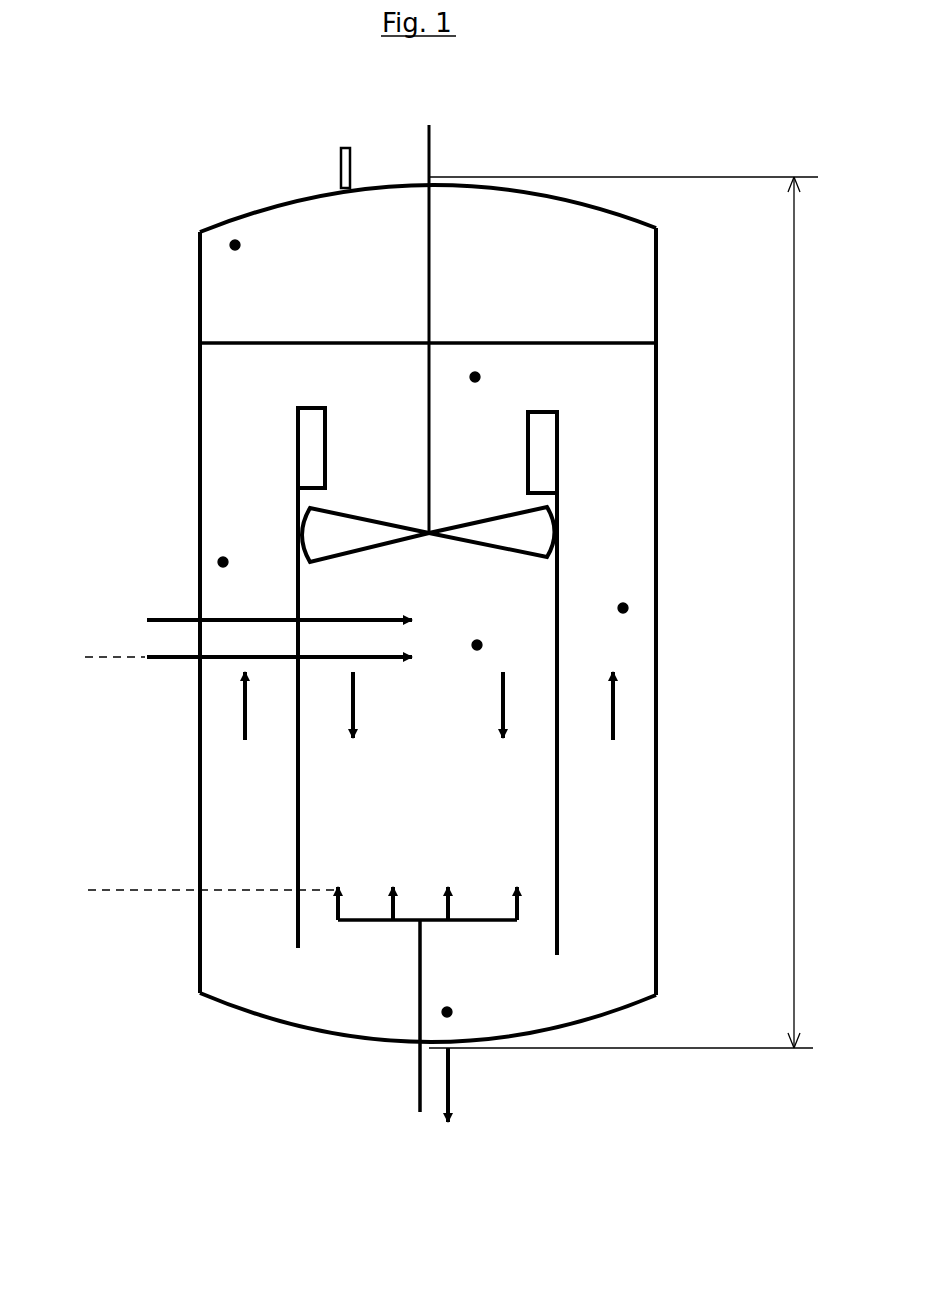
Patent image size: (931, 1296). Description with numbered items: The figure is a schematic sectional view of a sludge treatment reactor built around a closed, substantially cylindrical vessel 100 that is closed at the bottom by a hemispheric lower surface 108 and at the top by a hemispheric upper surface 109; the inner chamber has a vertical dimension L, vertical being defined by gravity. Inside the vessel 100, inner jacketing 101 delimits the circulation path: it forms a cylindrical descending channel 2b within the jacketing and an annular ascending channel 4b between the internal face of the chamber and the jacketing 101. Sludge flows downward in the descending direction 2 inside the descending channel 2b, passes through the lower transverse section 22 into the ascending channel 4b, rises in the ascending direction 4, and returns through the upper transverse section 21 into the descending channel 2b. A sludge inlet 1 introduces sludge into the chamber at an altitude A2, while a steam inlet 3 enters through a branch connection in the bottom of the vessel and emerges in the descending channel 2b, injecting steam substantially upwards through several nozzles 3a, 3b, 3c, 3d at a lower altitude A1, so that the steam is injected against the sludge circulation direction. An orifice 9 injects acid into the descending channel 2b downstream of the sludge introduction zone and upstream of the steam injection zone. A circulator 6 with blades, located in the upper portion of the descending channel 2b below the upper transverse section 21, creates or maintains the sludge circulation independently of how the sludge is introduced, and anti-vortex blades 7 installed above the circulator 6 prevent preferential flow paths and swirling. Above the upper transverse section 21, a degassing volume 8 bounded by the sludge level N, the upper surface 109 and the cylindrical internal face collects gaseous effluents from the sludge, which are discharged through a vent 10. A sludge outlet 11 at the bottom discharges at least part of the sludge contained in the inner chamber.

The sludge inlet 1 is at (374, 618).
The descending direction 2 is at (348, 705).
The descending channel 2b is at (477, 645).
The steam inlet 3 is at (420, 945).
The nozzle 3a is at (342, 888).
The nozzle 3b is at (397, 888).
The nozzle 3c is at (452, 888).
The nozzle 3d is at (518, 888).
The ascending direction 4 is at (242, 722).
The ascending channel 4b is at (223, 562).
The circulator 6 is at (368, 516).
The blades 7 is at (326, 440).
The degassing volume 8 is at (235, 245).
The orifice 9 is at (384, 661).
The vent 10 is at (341, 152).
The sludge outlet 11 is at (452, 1075).
The upper transverse section 21 is at (475, 377).
The lower transverse section 22 is at (447, 1012).
The vessel 100 is at (656, 506).
The inner jacketing 101 is at (298, 918).
The lower surface 108 is at (268, 1021).
The upper surface 109 is at (578, 208).
The level N is at (473, 342).
The vertical dimension L is at (623, 612).
The altitude A1 is at (187, 889).
The altitude A2 is at (92, 657).